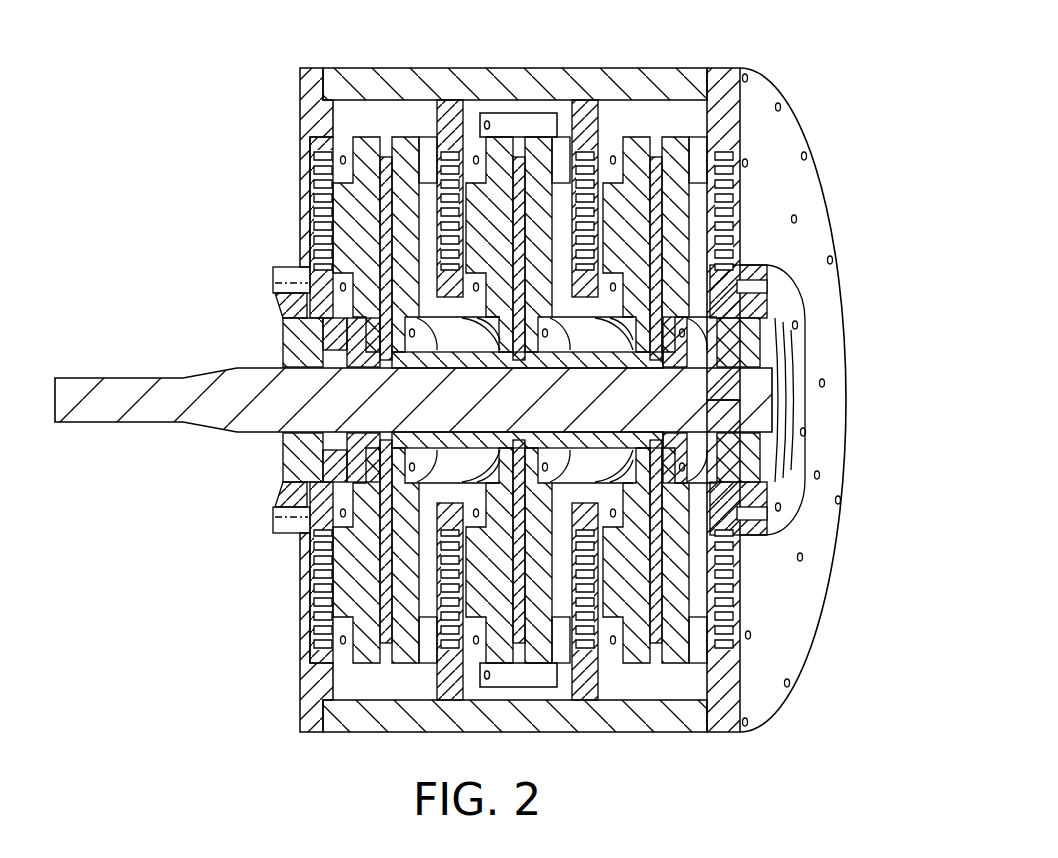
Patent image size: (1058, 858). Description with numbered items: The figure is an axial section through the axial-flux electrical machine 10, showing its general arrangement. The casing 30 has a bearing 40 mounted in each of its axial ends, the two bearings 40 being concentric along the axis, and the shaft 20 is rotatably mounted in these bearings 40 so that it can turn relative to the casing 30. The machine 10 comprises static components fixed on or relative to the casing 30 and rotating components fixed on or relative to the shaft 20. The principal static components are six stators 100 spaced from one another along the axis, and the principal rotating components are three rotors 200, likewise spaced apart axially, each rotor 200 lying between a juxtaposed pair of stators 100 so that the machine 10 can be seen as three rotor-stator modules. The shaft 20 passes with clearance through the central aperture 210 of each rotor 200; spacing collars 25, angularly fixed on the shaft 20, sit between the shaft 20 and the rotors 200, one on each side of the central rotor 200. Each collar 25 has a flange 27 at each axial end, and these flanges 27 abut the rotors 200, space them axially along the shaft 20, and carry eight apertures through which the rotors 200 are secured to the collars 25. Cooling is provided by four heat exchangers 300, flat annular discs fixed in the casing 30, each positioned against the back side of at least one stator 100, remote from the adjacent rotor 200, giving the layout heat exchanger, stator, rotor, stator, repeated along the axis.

The electrical machine 10 is at (779, 54).
The shaft 20 is at (93, 376).
The spacing collar 25 is at (605, 482).
The flange 27 is at (633, 322).
The casing 30 is at (797, 132).
The bearing 40 is at (283, 462).
The stator 100 is at (588, 403).
The rotor 200 is at (382, 665).
The central aperture 210 is at (386, 365).
The heat exchanger 300 is at (325, 665).